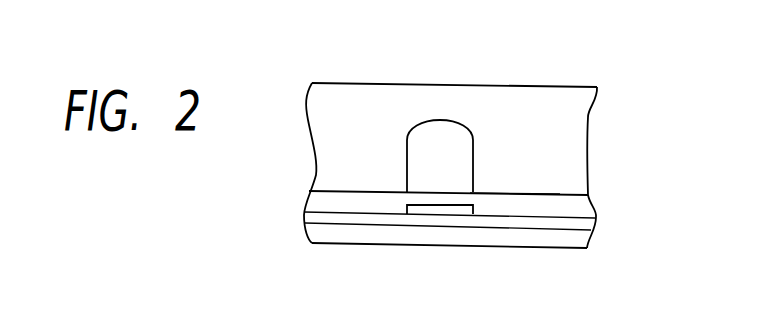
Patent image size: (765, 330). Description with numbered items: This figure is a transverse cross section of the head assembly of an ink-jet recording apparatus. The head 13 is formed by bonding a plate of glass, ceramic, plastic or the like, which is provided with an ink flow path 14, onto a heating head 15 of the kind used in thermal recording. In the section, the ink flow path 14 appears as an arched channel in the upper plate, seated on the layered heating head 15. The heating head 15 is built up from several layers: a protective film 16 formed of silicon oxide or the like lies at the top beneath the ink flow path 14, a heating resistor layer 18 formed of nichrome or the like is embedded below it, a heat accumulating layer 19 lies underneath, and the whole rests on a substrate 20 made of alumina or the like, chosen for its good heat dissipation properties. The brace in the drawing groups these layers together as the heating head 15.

The head 13 is at (353, 83).
The ink flow path 14 is at (440, 120).
The heating head 15 is at (610, 191).
The protective film 16 is at (519, 200).
The heating resistor layer 18 is at (476, 212).
The heat accumulating layer 19 is at (558, 223).
The substrate 20 is at (523, 240).